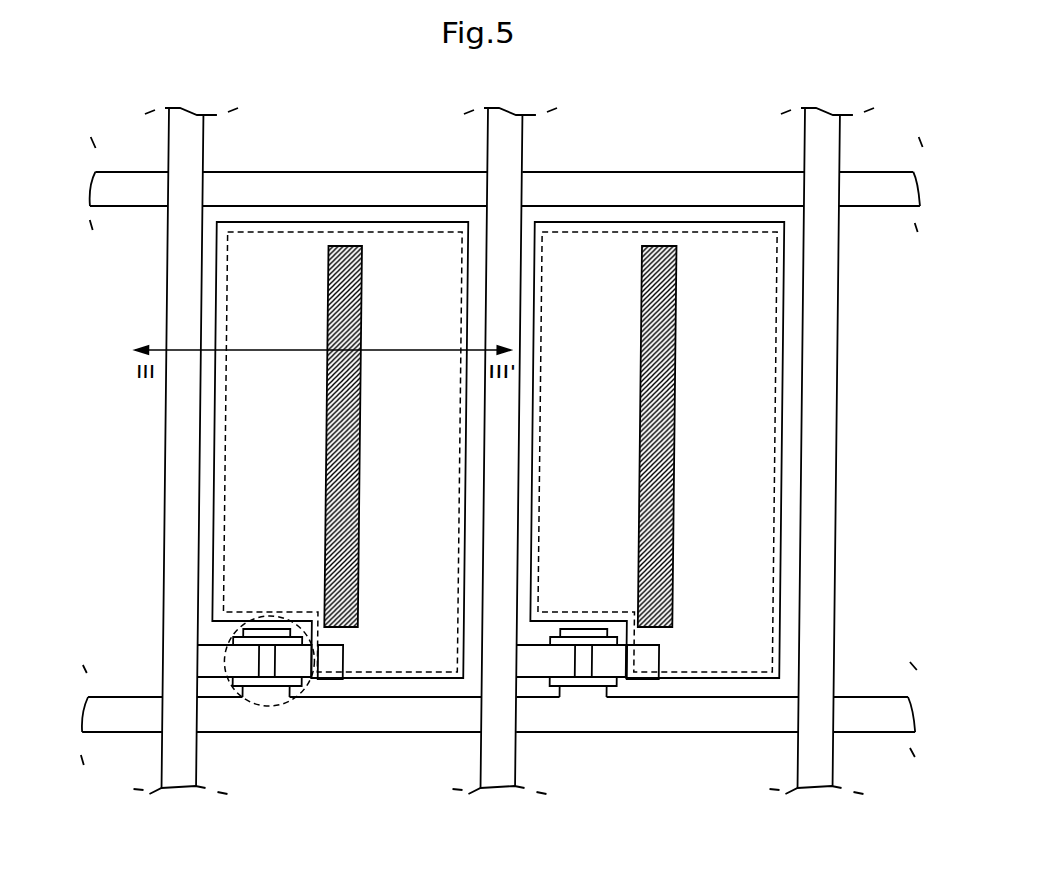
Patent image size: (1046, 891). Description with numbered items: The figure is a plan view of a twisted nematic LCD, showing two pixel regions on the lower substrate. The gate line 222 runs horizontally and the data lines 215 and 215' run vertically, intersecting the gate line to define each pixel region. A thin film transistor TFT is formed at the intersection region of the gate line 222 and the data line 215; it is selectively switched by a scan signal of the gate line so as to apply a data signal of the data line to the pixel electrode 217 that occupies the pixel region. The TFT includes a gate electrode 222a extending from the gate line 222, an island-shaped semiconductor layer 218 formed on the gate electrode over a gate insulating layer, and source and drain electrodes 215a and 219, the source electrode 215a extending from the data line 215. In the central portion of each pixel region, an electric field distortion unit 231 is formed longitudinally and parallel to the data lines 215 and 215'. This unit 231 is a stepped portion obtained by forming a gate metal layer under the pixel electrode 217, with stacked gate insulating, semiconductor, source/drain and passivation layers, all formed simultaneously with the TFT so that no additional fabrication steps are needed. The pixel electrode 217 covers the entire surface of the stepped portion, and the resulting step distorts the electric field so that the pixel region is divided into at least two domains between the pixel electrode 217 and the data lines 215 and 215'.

The gate line 222 is at (345, 185).
The gate electrode 222a is at (266, 628).
The data line 215 is at (155, 451).
The data line 215' is at (504, 492).
The source electrode 215a is at (240, 663).
The semiconductor layer 218 is at (274, 680).
The drain electrode 219 is at (333, 678).
The pixel electrode 217 is at (383, 678).
The electric field distortion unit 231 is at (338, 435).
The thin film transistor TFT is at (295, 690).